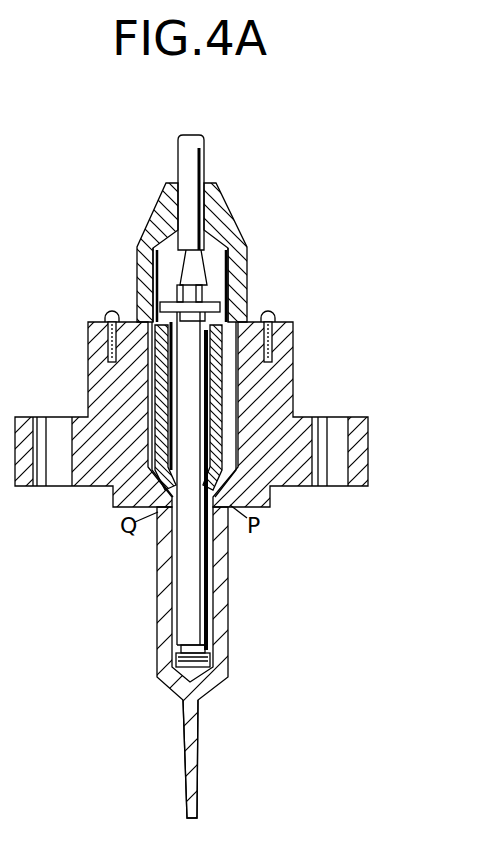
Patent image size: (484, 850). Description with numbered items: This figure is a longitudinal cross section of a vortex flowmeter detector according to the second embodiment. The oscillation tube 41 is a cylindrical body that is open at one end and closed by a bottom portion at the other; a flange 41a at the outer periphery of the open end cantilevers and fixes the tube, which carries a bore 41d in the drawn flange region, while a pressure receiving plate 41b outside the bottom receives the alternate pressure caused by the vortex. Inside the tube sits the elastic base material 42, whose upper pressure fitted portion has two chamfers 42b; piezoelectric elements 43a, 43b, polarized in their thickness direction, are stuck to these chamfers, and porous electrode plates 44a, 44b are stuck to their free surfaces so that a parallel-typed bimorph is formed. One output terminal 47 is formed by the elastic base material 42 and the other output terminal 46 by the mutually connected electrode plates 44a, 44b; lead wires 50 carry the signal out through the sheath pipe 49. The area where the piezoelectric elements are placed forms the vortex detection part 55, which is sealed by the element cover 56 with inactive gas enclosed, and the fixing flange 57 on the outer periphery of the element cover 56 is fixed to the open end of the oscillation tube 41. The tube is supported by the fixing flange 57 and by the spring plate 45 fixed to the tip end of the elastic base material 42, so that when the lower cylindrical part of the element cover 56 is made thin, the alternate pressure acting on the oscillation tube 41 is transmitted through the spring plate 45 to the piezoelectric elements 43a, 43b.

The oscillation tube 41 is at (353, 405).
The flange 41a is at (368, 458).
The pressure receiving plate 41b is at (199, 764).
The left flange bolt hole 41d is at (50, 488).
The elastic base material 42 is at (180, 576).
The chamfers 42b is at (176, 412).
The piezoelectric element 43a is at (278, 394).
The piezoelectric element 43b is at (160, 390).
The electrode plate 44a is at (280, 371).
The electrode plate 44b is at (150, 369).
The spring plate 45 is at (215, 660).
The output terminal 46 is at (178, 291).
The output terminal 47 is at (178, 283).
The sheath pipe 49 is at (197, 153).
The lead wires 50 is at (168, 258).
The vortex detection part 55 is at (214, 292).
The element cover 56 is at (232, 238).
The fixing flange 57 is at (293, 325).